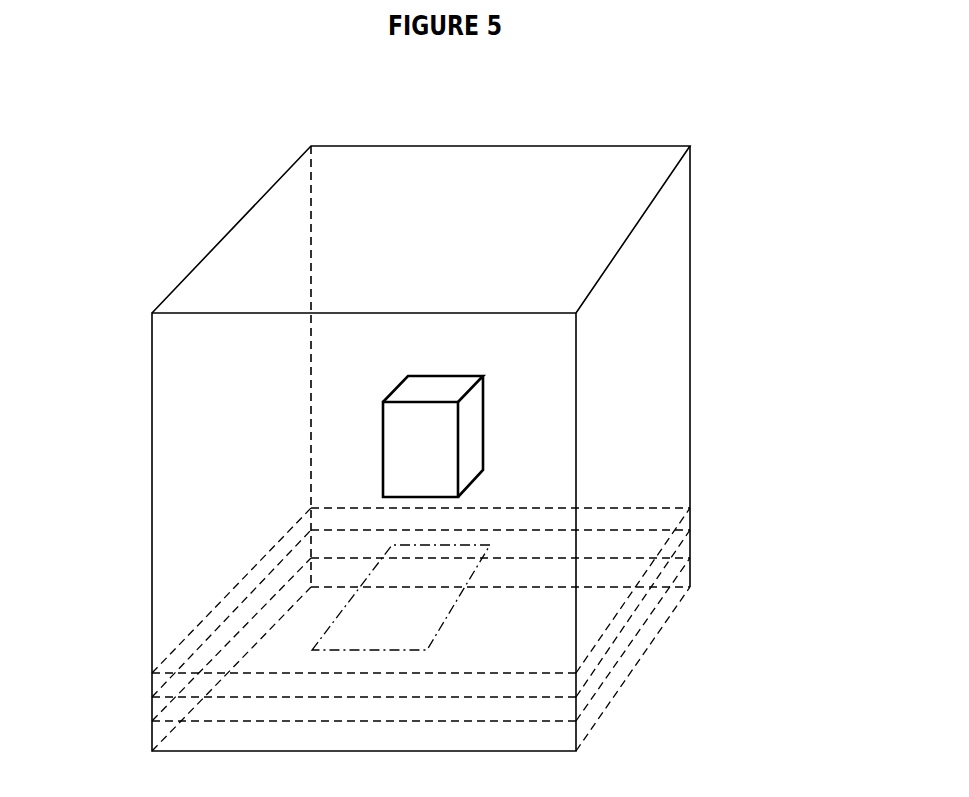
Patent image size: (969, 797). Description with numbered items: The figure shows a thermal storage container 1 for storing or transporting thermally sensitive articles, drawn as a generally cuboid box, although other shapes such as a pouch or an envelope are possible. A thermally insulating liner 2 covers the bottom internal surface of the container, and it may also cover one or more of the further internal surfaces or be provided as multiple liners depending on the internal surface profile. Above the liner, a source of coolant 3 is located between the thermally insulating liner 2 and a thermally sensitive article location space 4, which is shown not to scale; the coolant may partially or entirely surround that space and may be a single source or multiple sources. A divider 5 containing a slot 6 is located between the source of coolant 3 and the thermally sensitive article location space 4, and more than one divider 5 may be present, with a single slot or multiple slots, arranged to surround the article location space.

The thermal storage container 1 is at (747, 343).
The thermally insulating liner 2 is at (592, 710).
The source of coolant 3 is at (620, 643).
The thermally sensitive article location space 4 is at (415, 440).
The divider 5 is at (655, 572).
The slot 6 is at (367, 617).